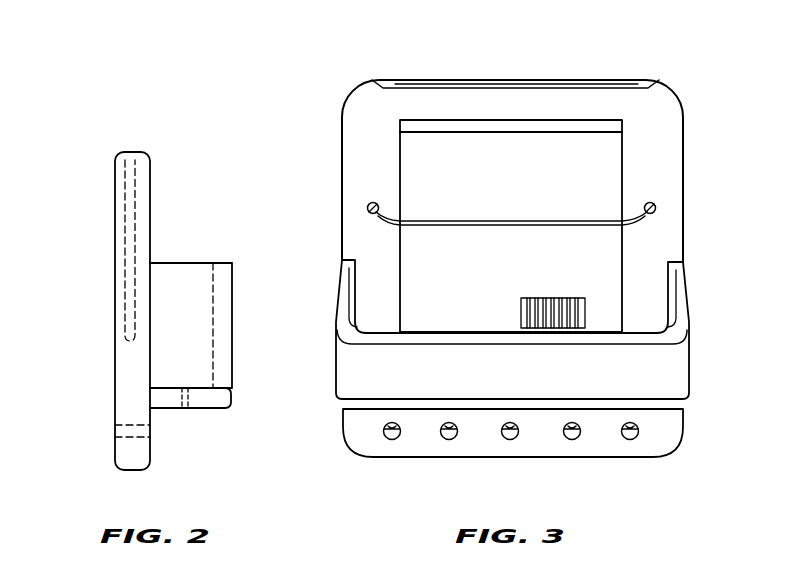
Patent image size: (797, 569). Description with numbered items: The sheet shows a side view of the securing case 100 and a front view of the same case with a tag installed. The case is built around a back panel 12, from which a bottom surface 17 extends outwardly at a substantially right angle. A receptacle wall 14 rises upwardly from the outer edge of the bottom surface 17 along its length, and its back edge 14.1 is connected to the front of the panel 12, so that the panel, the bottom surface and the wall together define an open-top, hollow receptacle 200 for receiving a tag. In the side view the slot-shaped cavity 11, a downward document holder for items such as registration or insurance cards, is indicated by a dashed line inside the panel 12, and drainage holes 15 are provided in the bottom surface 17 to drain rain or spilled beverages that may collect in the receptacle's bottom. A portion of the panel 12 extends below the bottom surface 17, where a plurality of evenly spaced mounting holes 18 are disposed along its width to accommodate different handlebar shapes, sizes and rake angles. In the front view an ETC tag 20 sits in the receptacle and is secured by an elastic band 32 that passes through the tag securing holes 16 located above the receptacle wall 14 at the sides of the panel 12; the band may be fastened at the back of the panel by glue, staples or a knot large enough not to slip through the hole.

In FIG. 2, the securing case 100 is at (80, 156).
In FIG. 3, the securing case 100 is at (332, 94).
In FIG. 2, the slot-shaped cavity 11 is at (133, 152).
In FIG. 2, the back panel 12 is at (115, 259).
In FIG. 3, the back panel 12 is at (683, 141).
In FIG. 2, the receptacle wall 14 is at (232, 338).
In FIG. 3, the receptacle wall 14 is at (689, 352).
In FIG. 2, the back edge 14.1 is at (152, 288).
In FIG. 2, the drainage holes 15 is at (183, 410).
In FIG. 3, the tag securing holes 16 is at (375, 203).
In FIG. 2, the bottom surface 17 is at (231, 396).
In FIG. 3, the bottom surface 17 is at (689, 398).
In FIG. 2, the mounting holes 18 is at (115, 431).
In FIG. 3, the mounting holes 18 is at (394, 440).
In FIG. 3, the ETC tag 20 is at (580, 128).
In FIG. 3, the elastic band 32 is at (441, 226).
In FIG. 2, the hollow receptacle 200 is at (185, 325).